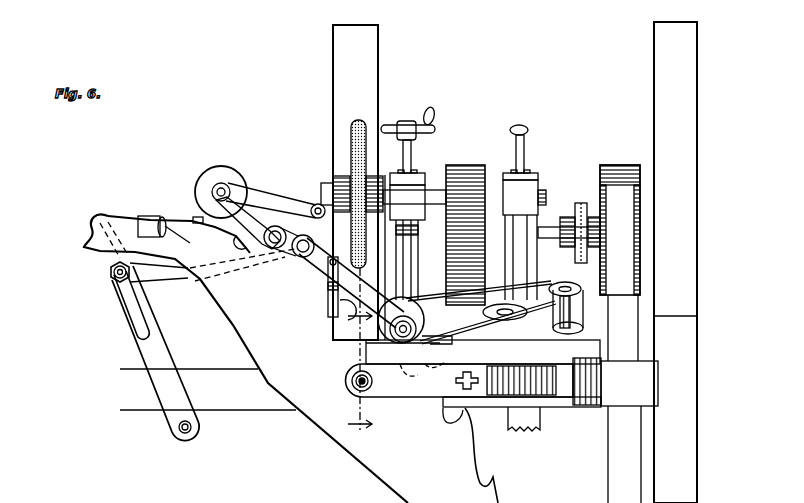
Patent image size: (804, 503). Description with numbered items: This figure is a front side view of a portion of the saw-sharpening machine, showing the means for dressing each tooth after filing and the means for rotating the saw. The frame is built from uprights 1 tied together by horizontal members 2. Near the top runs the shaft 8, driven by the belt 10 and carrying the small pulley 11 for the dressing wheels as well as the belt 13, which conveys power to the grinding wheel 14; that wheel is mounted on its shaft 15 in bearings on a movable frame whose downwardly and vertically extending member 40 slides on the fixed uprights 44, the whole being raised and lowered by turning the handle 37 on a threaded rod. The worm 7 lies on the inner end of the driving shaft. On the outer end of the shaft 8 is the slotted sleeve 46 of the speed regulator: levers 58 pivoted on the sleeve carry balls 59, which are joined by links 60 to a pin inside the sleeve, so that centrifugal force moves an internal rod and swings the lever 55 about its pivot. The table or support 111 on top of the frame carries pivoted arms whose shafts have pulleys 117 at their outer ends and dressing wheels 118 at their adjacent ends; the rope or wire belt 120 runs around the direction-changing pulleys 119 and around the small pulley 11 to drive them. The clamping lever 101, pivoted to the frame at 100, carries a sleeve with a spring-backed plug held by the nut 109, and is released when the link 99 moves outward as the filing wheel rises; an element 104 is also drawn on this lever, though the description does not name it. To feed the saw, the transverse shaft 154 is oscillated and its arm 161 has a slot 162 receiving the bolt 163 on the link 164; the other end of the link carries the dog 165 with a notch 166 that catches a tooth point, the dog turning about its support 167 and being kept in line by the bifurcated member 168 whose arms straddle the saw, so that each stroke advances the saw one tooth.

The upright 1 is at (342, 53).
The horizontal member 2 is at (223, 400).
The worm 7 is at (360, 359).
The shaft 8 is at (547, 226).
The belt 10 is at (620, 165).
The pulley 11 is at (577, 203).
The belt 13 is at (466, 166).
The grinding wheel 14 is at (358, 119).
The shaft 15 is at (383, 220).
The handle 37 is at (430, 126).
The downwardly and vertically extending member 40 is at (516, 262).
The fixed upright 44 is at (525, 129).
The sleeve 46 is at (196, 221).
The lever 55 is at (150, 216).
The lever 58 is at (279, 197).
The weight or ball 59 is at (222, 166).
The link 60 is at (246, 223).
The link 99 is at (457, 381).
The pivotal support 100 is at (602, 380).
The lever 101 is at (412, 390).
The slide 104 is at (472, 374).
The nut 109 is at (373, 382).
The table or support 111 is at (584, 314).
The pulley 117 is at (418, 330).
The dressing wheel 118 is at (418, 310).
The pulley 119 is at (528, 300).
The rope or wire belt 120 is at (581, 265).
The shaft 154 is at (188, 431).
The arm 161 is at (170, 385).
The slot 162 is at (136, 305).
The bolt 163 is at (110, 273).
The link 164 is at (180, 279).
The dog 165 is at (325, 272).
The notch 166 is at (338, 339).
The support 167 is at (292, 256).
The bifurcated member 168 is at (328, 316).